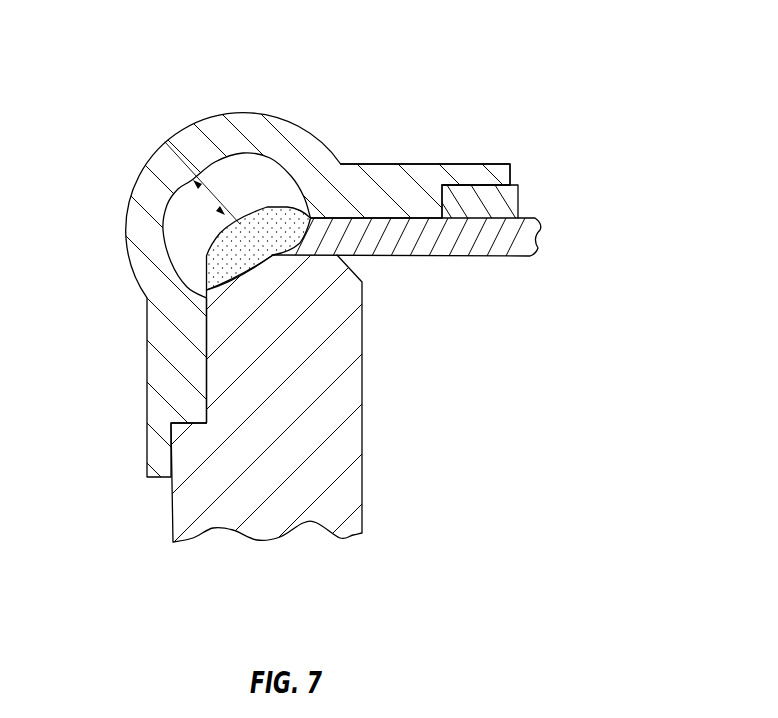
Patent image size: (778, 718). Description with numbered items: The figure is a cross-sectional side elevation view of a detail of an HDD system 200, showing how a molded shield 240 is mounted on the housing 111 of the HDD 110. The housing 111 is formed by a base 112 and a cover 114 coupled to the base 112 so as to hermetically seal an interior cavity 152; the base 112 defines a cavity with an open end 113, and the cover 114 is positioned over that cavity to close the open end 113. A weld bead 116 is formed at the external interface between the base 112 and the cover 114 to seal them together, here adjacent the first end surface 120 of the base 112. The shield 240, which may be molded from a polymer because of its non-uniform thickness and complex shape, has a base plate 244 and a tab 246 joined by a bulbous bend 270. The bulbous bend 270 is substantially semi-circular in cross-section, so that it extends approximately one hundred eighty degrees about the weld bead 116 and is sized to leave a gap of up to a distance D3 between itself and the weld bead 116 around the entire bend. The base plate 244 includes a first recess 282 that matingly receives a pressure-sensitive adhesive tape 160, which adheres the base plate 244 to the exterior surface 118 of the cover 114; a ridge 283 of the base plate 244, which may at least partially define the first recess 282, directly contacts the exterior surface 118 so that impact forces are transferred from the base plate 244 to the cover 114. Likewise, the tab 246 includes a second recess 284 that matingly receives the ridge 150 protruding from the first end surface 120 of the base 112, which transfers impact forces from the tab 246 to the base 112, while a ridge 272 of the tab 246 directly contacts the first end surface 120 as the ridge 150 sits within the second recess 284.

The HDD system 200 is at (622, 45).
The bulbous bend 270 is at (193, 151).
The weld bead 116 is at (265, 230).
The base plate 244 is at (373, 164).
The exterior surface 118 is at (427, 218).
The shield 240 is at (483, 155).
The first recess 282 is at (501, 188).
The pressure-sensitive adhesive tape 160 is at (498, 203).
The cover 114 is at (470, 240).
The ridge 283 is at (396, 205).
The open end 113 is at (364, 272).
The interior cavity 152 is at (497, 401).
The tab 246 is at (147, 313).
The ridge 272 is at (167, 351).
The first end surface 120 is at (205, 393).
The ridge 150 is at (195, 440).
The second recess 284 is at (175, 453).
The housing 111 is at (187, 556).
The base 112 is at (282, 500).
The HDD 110 is at (380, 513).
The distance D3 is at (166, 216).